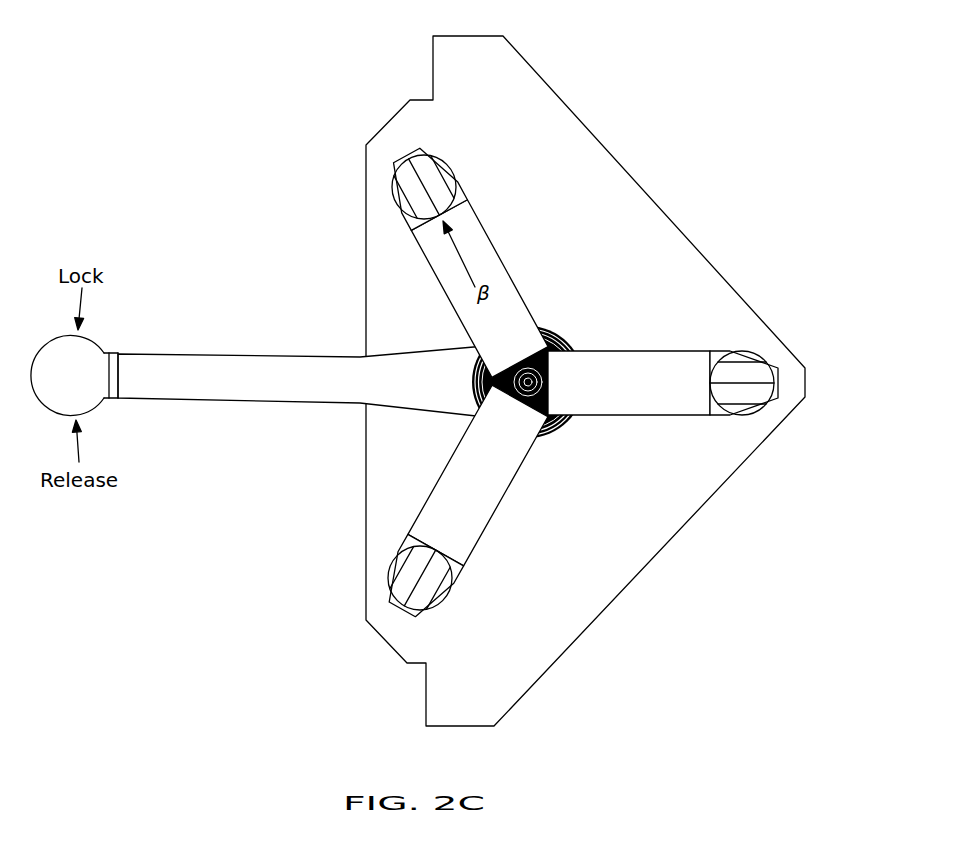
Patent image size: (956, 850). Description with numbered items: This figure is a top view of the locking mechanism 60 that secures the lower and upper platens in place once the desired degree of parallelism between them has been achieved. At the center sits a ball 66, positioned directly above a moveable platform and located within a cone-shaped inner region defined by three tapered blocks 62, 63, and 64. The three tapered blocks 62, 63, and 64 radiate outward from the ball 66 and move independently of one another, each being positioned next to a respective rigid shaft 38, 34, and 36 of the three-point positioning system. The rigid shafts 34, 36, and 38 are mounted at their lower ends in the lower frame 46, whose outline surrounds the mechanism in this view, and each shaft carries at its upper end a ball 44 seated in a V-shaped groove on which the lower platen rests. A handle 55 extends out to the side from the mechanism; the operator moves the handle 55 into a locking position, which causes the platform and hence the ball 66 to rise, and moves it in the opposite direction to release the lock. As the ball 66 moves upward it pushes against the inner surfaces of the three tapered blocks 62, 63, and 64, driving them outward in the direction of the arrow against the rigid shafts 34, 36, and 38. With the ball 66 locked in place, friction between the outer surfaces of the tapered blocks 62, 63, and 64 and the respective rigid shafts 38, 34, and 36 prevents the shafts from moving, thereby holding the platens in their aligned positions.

The rigid shaft 34 is at (437, 158).
The rigid shaft 36 is at (768, 368).
The rigid shaft 38 is at (418, 612).
The ball 44 is at (407, 187).
The lower frame 46 is at (365, 478).
The handle 55 is at (102, 342).
The locking mechanism 60 is at (716, 564).
The tapered block 62 is at (500, 495).
The tapered block 63 is at (485, 232).
The tapered block 64 is at (640, 347).
The ball 66 is at (552, 324).